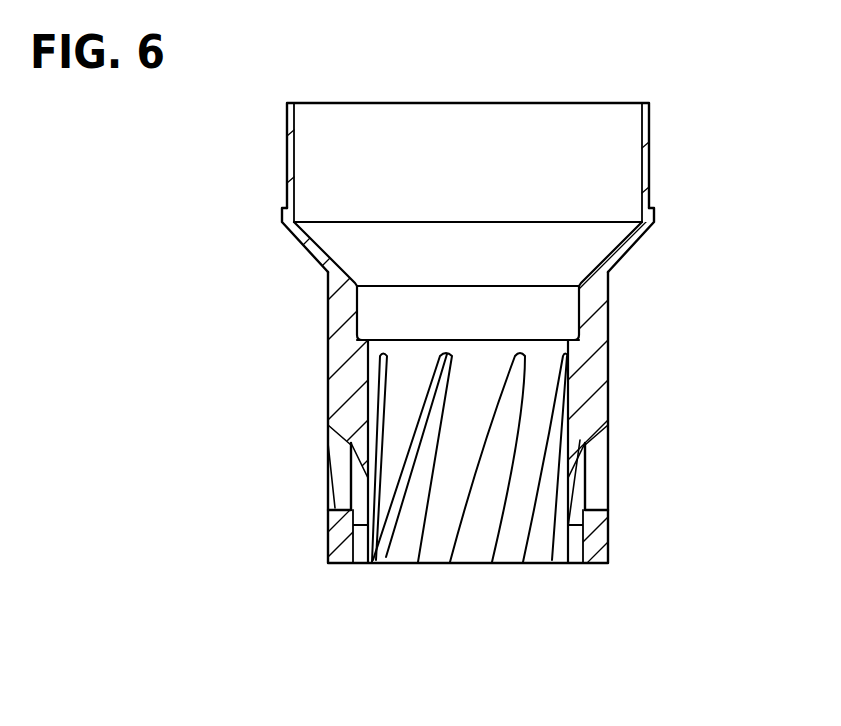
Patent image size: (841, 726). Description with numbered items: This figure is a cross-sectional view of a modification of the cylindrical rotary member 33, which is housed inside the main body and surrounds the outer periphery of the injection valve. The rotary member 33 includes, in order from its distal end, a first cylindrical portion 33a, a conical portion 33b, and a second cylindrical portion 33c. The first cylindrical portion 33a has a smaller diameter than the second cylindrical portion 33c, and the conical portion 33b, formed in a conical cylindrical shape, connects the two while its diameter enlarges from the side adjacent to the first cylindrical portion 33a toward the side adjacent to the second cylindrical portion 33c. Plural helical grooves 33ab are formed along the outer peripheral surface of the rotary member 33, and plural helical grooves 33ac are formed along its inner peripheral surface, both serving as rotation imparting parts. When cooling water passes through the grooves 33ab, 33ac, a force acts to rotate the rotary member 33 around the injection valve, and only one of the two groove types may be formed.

The rotary member 33 is at (693, 120).
The first cylindrical portion 33a is at (328, 360).
The conical portion 33b is at (293, 239).
The second cylindrical portion 33c is at (287, 158).
The helical grooves 33ab is at (350, 472).
The helical grooves 33ac is at (447, 535).